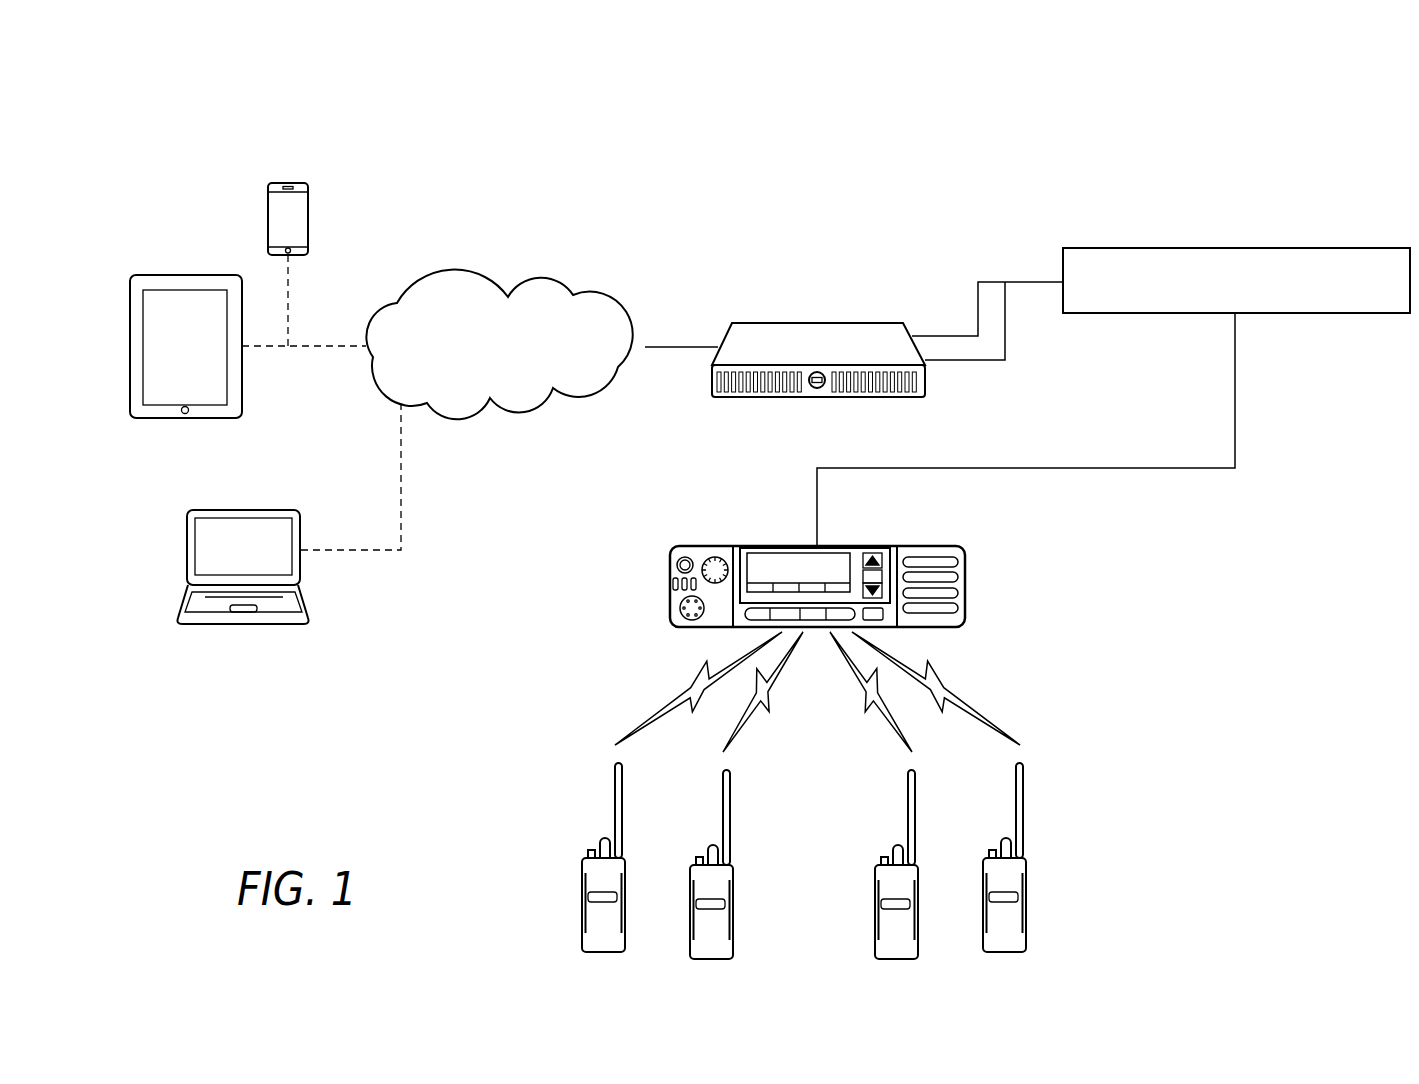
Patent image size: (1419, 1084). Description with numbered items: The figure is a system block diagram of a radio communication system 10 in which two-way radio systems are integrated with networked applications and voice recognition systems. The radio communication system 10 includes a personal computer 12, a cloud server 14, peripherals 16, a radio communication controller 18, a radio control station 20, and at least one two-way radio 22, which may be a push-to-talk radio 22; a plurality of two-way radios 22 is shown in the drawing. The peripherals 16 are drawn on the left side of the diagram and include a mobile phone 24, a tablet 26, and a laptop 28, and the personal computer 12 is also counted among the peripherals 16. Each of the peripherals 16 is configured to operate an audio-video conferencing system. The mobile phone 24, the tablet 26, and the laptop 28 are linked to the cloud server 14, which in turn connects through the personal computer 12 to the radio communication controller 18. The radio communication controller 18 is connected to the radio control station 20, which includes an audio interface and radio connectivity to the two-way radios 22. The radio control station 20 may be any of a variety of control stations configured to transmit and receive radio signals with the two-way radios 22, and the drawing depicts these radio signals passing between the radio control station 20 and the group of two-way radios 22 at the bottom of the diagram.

The radio communication system 10 is at (445, 167).
The personal computer 12 is at (817, 323).
The cloud server 14 is at (540, 278).
The peripherals 16 is at (180, 207).
The radio communication controller 18 is at (1235, 248).
The radio control station 20 is at (965, 587).
The two-way radio 22 is at (1075, 823).
The mobile phone 24 is at (308, 218).
The tablet 26 is at (183, 418).
The laptop 28 is at (242, 624).